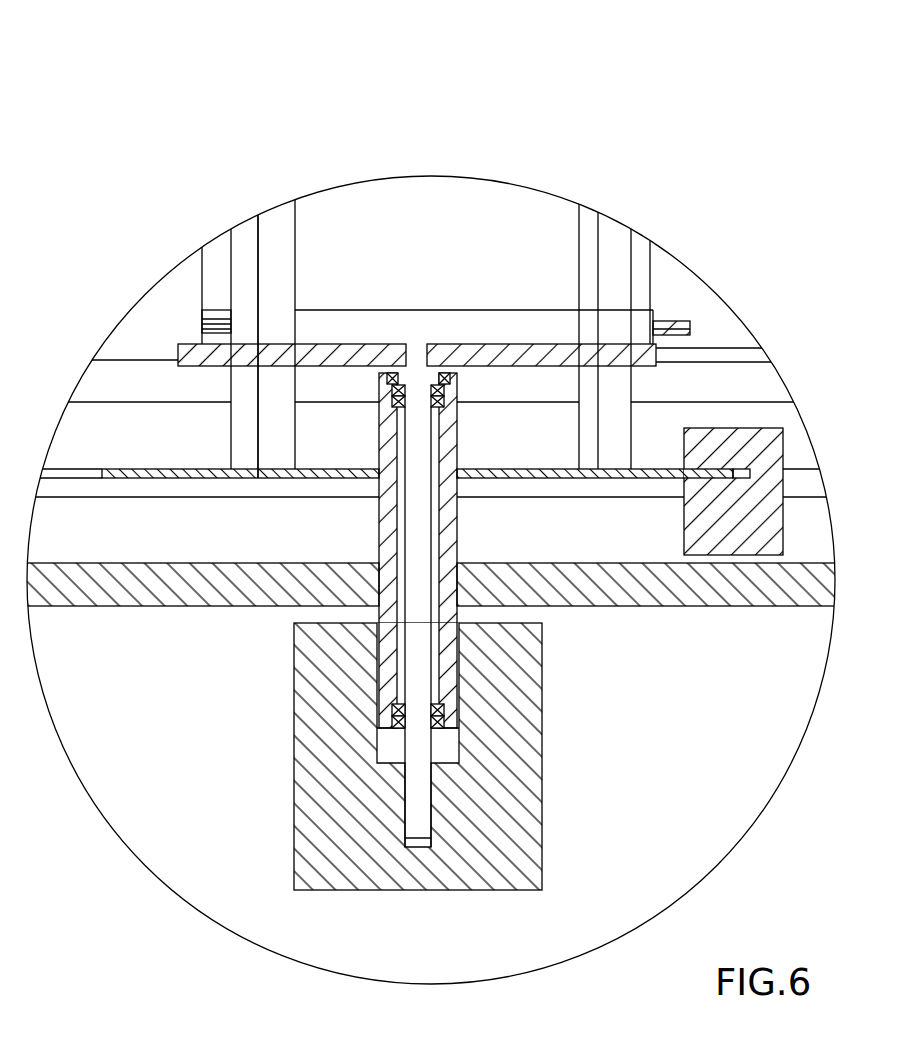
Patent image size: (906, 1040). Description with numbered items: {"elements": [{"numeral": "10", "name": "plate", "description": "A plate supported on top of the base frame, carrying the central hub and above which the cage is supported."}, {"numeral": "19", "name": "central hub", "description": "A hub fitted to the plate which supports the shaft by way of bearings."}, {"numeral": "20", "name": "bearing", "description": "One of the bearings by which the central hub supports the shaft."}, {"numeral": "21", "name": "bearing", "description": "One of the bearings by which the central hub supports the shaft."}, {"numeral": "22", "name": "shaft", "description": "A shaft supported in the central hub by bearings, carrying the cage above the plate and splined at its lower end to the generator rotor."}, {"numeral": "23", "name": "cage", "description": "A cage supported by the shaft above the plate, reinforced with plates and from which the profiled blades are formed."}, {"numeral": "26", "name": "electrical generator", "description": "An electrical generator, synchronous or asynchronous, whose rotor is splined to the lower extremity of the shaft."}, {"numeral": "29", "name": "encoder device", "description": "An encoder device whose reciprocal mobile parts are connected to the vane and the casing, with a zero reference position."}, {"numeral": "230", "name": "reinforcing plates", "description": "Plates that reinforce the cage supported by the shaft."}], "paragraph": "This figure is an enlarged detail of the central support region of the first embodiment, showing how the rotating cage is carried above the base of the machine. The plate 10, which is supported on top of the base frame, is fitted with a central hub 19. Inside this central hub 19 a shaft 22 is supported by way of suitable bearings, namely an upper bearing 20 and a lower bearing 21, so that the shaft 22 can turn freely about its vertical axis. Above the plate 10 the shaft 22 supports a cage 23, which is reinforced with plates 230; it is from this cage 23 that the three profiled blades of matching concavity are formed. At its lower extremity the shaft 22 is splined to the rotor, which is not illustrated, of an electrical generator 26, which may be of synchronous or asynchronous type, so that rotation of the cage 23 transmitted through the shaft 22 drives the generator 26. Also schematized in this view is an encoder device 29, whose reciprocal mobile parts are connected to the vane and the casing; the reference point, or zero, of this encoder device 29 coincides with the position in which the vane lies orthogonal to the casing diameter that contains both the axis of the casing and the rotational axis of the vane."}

The base plate 10 is at (143, 590).
The sleeve 19 is at (387, 525).
The lower bearing 20 is at (442, 708).
The upper bearing 21 is at (443, 368).
The rotating shaft 22 is at (415, 745).
The support column 23 is at (282, 256).
The mounting block 26 is at (515, 822).
The fixing block 29 is at (738, 533).
The mounting plate 230 is at (363, 354).